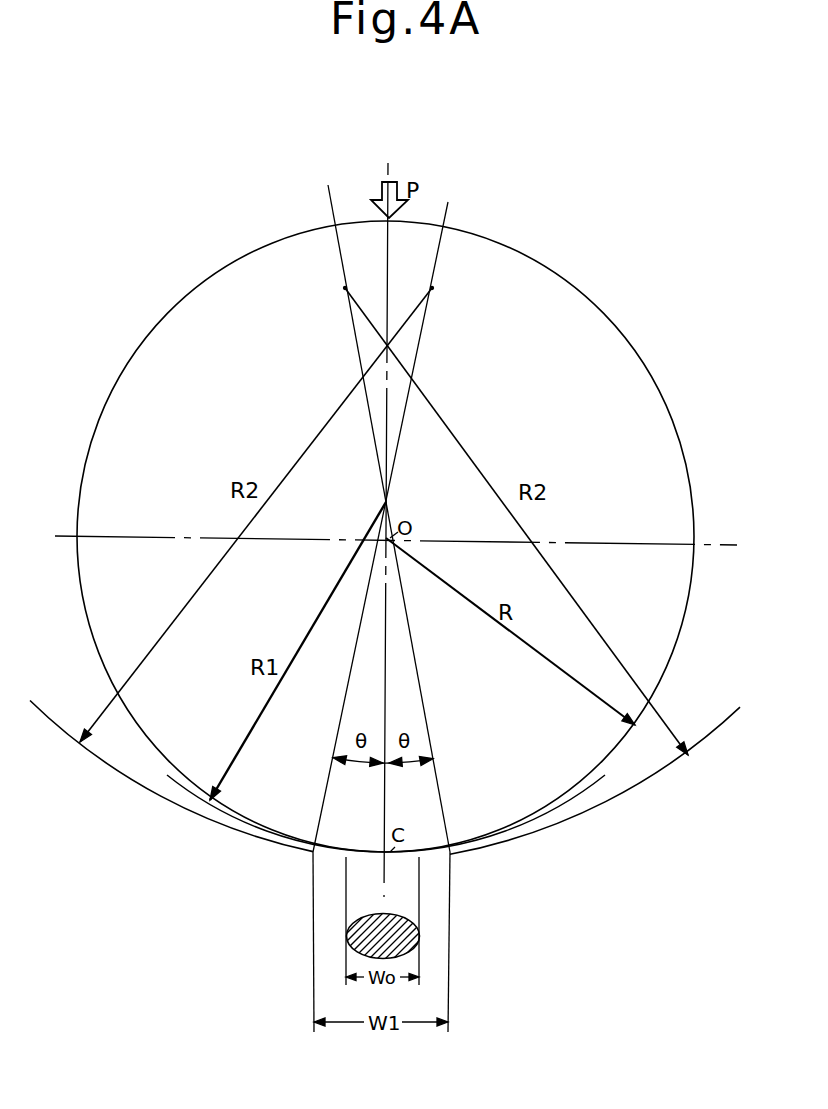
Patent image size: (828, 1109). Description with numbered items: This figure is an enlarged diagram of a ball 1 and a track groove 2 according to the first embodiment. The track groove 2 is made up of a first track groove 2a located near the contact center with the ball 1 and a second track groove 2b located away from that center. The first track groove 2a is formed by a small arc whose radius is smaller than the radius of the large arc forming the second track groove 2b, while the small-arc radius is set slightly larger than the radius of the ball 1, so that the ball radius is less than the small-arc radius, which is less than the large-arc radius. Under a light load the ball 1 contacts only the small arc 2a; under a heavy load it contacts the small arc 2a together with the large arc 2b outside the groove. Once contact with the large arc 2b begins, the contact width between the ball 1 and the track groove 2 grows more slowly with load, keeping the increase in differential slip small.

The ball 1 is at (638, 357).
The track groove 2 is at (122, 768).
The first track groove 2a is at (437, 850).
The second track groove 2b is at (635, 787).